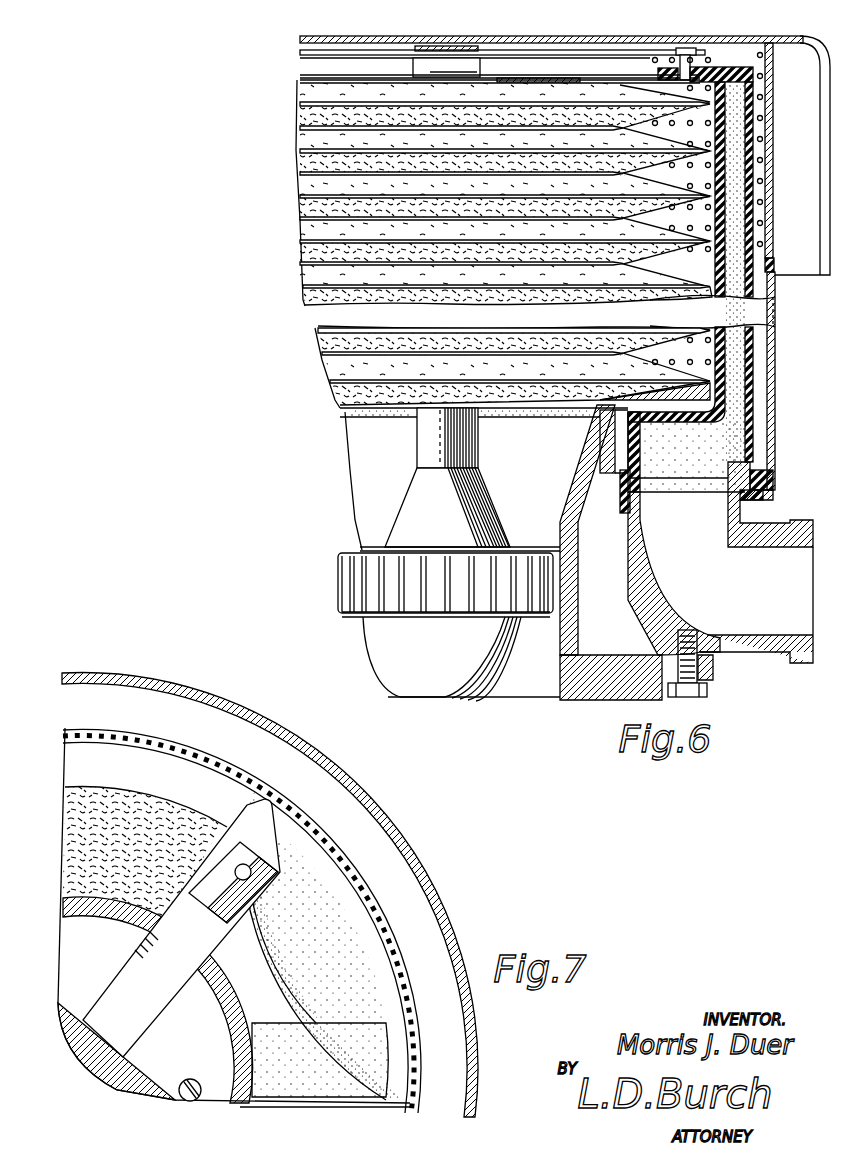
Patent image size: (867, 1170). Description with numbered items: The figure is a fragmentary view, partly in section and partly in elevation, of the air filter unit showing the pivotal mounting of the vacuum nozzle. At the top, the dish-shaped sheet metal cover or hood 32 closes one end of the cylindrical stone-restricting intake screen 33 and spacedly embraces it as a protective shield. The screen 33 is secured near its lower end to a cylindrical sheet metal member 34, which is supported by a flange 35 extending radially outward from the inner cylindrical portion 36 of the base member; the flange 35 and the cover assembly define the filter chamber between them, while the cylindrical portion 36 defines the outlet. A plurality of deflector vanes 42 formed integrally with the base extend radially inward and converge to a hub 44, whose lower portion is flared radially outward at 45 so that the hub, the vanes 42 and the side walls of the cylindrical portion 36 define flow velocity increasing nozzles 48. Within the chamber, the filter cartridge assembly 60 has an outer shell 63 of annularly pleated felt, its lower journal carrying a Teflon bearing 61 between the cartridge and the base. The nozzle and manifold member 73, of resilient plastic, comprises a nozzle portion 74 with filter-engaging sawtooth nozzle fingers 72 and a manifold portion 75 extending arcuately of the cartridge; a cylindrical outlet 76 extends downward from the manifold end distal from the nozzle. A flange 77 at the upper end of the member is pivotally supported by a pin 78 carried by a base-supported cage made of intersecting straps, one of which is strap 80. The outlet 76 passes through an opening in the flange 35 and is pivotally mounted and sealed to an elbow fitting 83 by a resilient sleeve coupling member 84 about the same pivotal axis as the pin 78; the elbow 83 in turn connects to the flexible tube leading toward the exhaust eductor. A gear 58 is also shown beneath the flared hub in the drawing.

In FIG. 6, the cover or hood 32 is at (576, 37).
In FIG. 7, the cover or hood 32 is at (208, 692).
In FIG. 6, the intake screen 33 is at (774, 160).
In FIG. 7, the intake screen 33 is at (240, 772).
In FIG. 6, the cylindrical sheet metal member 34 is at (778, 315).
In FIG. 6, the flange 35 is at (600, 470).
In FIG. 6, the inner cylindrical portion 36 is at (578, 640).
In FIG. 6, the deflector vanes 42 is at (640, 441).
In FIG. 6, the hub 44 is at (470, 430).
In FIG. 6, the flared lower portion of hub 45 is at (490, 515).
In FIG. 6, the flow velocity increasing nozzles 48 is at (580, 538).
In FIG. 6, the gear 58 is at (470, 640).
In FIG. 6, the filter cartridge assembly 60 is at (645, 82).
In FIG. 7, the filter cartridge assembly 60 is at (248, 1105).
In FIG. 6, the Teflon bearing 61 is at (602, 420).
In FIG. 6, the outer shell 63 is at (650, 340).
In FIG. 7, the outer shell 63 is at (136, 805).
In FIG. 7, the sawtooth nozzle fingers 72 is at (290, 1090).
In FIG. 6, the nozzle and manifold member 73 is at (756, 207).
In FIG. 7, the nozzle and manifold member 73 is at (372, 934).
In FIG. 7, the nozzle portion 74 is at (400, 1082).
In FIG. 6, the manifold portion 75 is at (745, 297).
In FIG. 7, the manifold portion 75 is at (345, 870).
In FIG. 6, the cylindrical outlet 76 is at (770, 476).
In FIG. 6, the flange 77 is at (712, 67).
In FIG. 7, the flange 77 is at (292, 950).
In FIG. 6, the pin 78 is at (683, 48).
In FIG. 7, the pin 78 is at (236, 870).
In FIG. 6, the strap 80 is at (622, 50).
In FIG. 7, the strap 80 is at (208, 915).
In FIG. 6, the elbow fitting 83 is at (634, 588).
In FIG. 6, the sleeve coupling member 84 is at (752, 502).